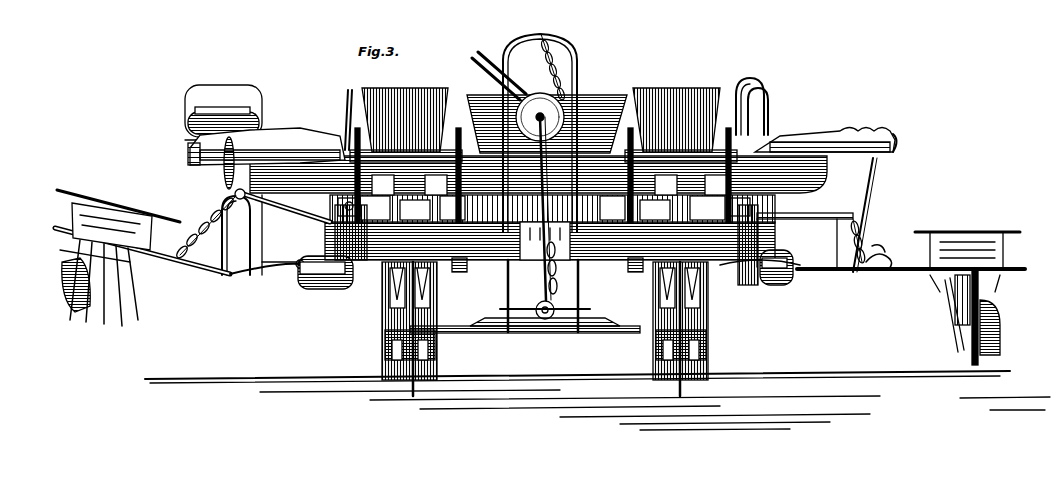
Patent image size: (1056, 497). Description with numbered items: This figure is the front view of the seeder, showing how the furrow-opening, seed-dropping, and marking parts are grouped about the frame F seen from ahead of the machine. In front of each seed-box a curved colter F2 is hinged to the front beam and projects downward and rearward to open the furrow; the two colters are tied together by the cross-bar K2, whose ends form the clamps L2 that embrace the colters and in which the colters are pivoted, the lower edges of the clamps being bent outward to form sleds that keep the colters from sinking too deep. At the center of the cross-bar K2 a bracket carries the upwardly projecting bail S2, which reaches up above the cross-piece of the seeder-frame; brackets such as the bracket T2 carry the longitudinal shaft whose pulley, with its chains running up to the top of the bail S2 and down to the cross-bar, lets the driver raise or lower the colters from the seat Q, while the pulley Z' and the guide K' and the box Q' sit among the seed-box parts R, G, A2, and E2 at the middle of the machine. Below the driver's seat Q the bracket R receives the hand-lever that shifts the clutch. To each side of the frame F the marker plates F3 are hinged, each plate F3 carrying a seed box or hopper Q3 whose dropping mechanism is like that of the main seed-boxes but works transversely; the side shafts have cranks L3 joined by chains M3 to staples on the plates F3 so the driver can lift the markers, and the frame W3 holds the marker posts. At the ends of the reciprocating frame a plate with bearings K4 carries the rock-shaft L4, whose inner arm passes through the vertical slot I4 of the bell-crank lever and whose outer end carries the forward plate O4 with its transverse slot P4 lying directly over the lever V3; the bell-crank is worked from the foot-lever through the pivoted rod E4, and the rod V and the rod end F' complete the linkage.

The plate O4 is at (223, 111).
The transverse slot P4 is at (187, 125).
The rock-shaft L4 is at (541, 135).
The bearings K4 is at (904, 140).
The vertical slot I4 is at (768, 92).
The pivoted rod E4 is at (742, 100).
The lever V3 is at (219, 163).
The post frame W3 is at (265, 240).
The crank or bracket L3 is at (544, 228).
The chain M3 is at (534, 233).
The top plate of side marker F3 is at (200, 277).
The seed box or hopper Q3 is at (541, 277).
The driver's seat Q is at (547, 112).
The pulley Z' is at (540, 117).
The bracket T2 is at (524, 167).
The bracket R is at (402, 138).
The right hopper K' is at (599, 136).
The box Q' is at (544, 208).
The body E2 is at (544, 174).
The rod V is at (872, 215).
The frame F is at (550, 280).
The leg A2 is at (437, 292).
The leg G is at (673, 321).
The clamps L2 is at (437, 365).
The bail S2 is at (553, 296).
The cross-bar K2 is at (485, 333).
The colters F2 is at (437, 322).
The rod end F' is at (665, 405).